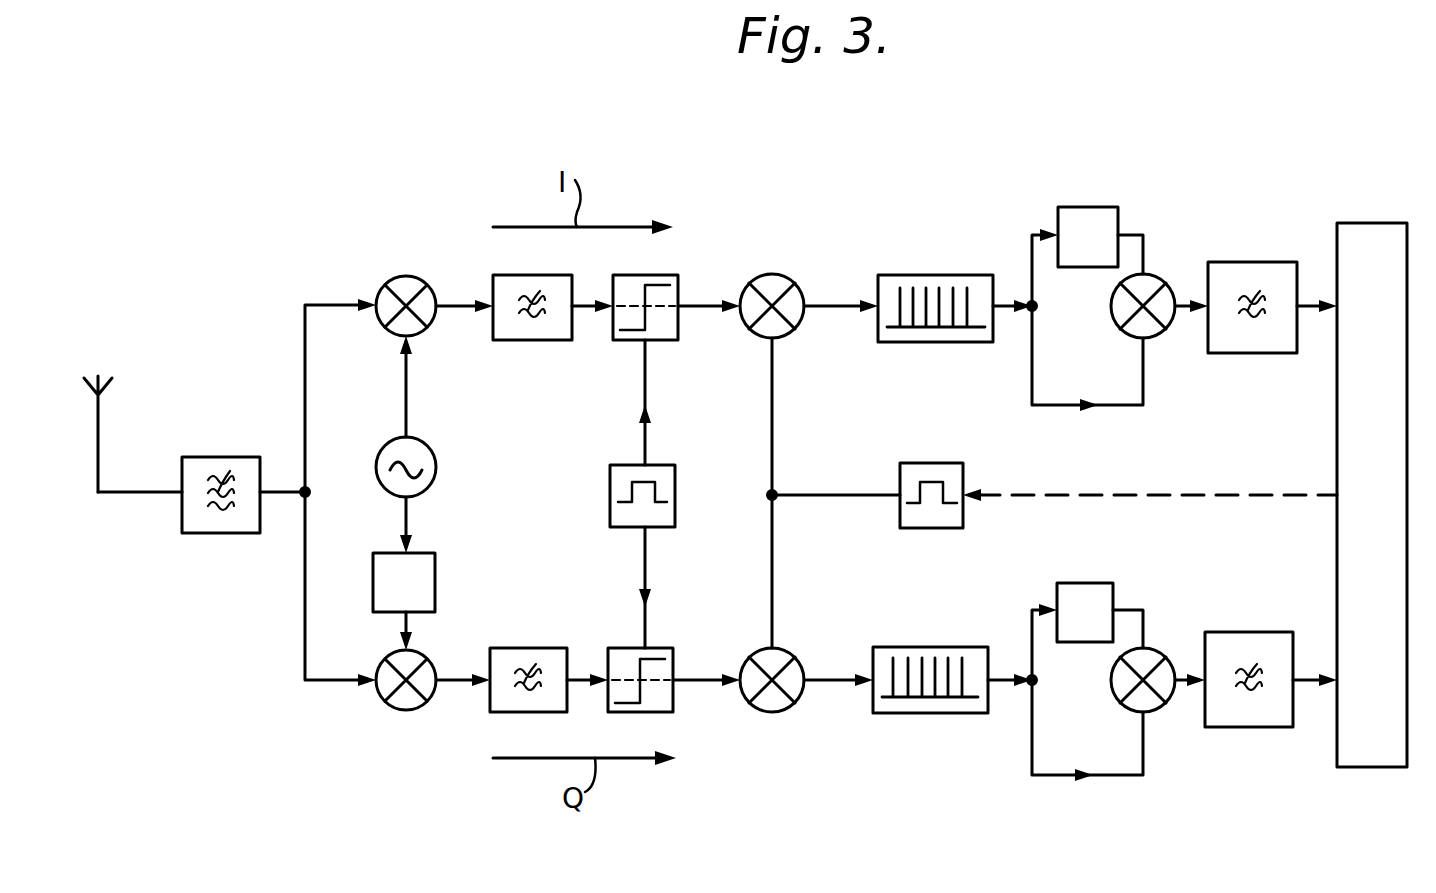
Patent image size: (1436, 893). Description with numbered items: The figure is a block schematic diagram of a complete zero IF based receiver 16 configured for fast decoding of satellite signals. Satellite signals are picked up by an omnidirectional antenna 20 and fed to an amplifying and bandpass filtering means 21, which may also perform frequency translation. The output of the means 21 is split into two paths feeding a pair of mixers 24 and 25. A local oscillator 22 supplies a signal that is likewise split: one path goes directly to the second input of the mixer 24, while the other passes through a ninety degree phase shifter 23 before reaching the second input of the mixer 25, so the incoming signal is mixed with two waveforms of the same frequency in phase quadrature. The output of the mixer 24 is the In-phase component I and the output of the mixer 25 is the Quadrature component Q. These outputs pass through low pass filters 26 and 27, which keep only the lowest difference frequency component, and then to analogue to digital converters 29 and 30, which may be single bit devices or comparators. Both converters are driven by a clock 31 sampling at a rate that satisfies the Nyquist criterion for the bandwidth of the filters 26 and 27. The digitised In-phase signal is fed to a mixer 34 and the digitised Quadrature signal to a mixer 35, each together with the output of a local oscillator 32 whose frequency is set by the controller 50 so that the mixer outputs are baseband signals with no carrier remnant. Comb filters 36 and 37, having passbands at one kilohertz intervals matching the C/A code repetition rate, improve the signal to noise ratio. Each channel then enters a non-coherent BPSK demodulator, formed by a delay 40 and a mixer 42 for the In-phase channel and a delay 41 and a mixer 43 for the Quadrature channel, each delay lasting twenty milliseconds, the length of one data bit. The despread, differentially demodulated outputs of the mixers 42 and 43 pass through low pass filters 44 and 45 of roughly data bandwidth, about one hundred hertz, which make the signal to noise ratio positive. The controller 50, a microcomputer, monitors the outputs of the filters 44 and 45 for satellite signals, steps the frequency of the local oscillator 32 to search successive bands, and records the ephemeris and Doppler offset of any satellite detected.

The receiver 16 is at (412, 747).
The omnidirectional antenna 20 is at (106, 393).
The amplifying and bandpass filtering means 21 is at (234, 457).
The local oscillator 22 is at (380, 451).
The 90° phase shifter 23 is at (373, 582).
The mixer 24 is at (389, 283).
The mixer 25 is at (381, 666).
The low pass filter 26 is at (535, 340).
The low pass filter 27 is at (548, 648).
The analogue to digital converter 29 is at (678, 290).
The analogue to digital converter 30 is at (658, 648).
The clock 31 is at (668, 465).
The local oscillator 32 is at (947, 463).
The mixer 34 is at (784, 276).
The mixer 35 is at (786, 653).
The comb filter 36 is at (957, 275).
The comb filter 37 is at (962, 647).
The delay 40 is at (1038, 186).
The delay 41 is at (1035, 562).
The mixer 42 is at (1162, 276).
The mixer 43 is at (1160, 651).
The low pass filter 44 is at (1272, 262).
The low pass filter 45 is at (1273, 632).
The controller 50 is at (1357, 223).